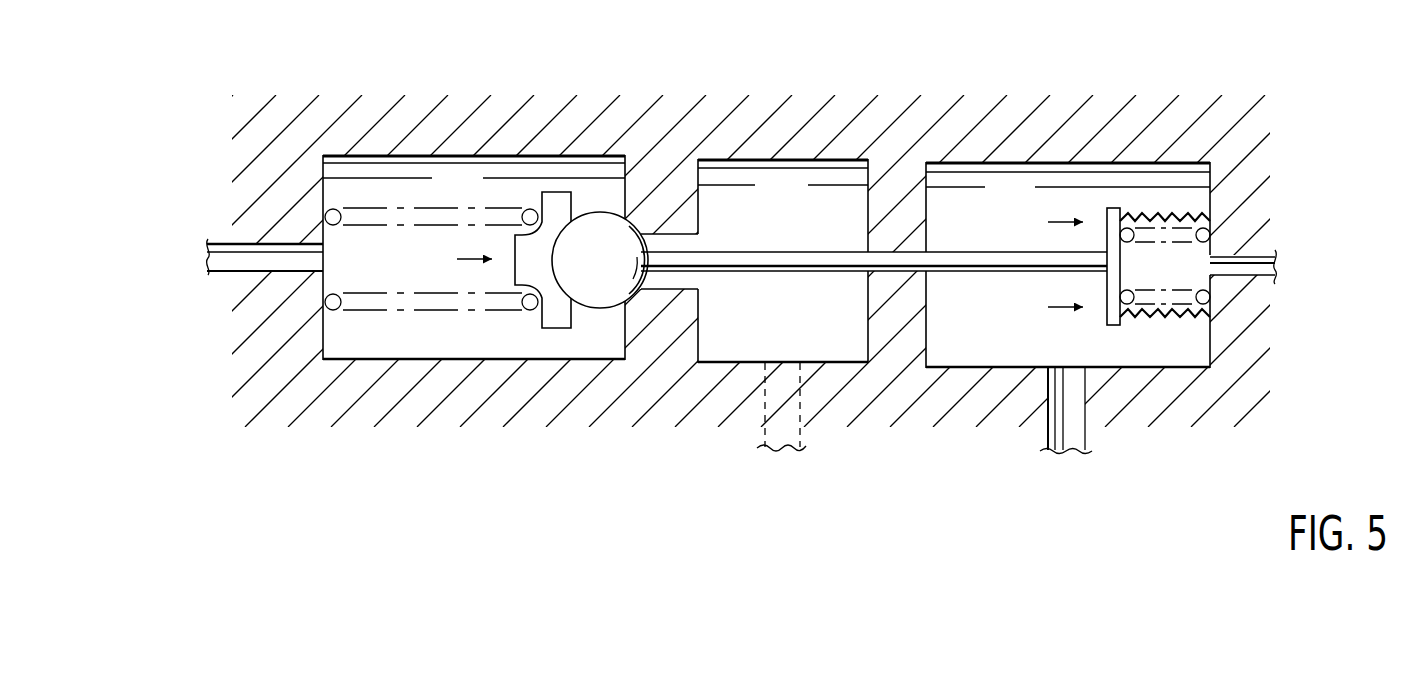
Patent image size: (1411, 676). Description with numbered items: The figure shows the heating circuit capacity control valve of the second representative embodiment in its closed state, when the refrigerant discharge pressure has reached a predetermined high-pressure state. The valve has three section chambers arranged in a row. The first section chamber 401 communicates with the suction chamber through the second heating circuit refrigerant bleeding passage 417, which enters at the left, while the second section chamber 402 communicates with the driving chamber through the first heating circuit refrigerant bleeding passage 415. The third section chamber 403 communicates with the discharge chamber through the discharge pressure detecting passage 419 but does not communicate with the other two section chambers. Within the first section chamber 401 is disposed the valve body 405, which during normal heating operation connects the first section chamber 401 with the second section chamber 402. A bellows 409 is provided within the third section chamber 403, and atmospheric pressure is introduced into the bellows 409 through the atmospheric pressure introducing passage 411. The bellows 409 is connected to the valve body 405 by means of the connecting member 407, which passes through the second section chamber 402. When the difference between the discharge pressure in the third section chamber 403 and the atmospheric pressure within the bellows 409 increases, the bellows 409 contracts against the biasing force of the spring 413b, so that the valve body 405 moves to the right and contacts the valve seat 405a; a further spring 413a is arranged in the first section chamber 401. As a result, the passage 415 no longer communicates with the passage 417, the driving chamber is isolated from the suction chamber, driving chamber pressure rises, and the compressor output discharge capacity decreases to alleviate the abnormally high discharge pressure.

The first section chamber 401 is at (517, 176).
The second section chamber 402 is at (828, 190).
The third section chamber 403 is at (1061, 190).
The valve body 405 is at (598, 290).
The valve seat 405a is at (618, 283).
The connecting member 407 is at (963, 262).
The bellows 409 is at (1163, 215).
The atmospheric pressure introducing passage 411 is at (1253, 258).
The spring 413a is at (412, 305).
The spring 413b is at (1185, 316).
The first heating circuit refrigerant bleeding passage 415 is at (800, 408).
The second heating circuit refrigerant bleeding passage 417 is at (278, 256).
The discharge pressure detecting passage 419 is at (1073, 403).